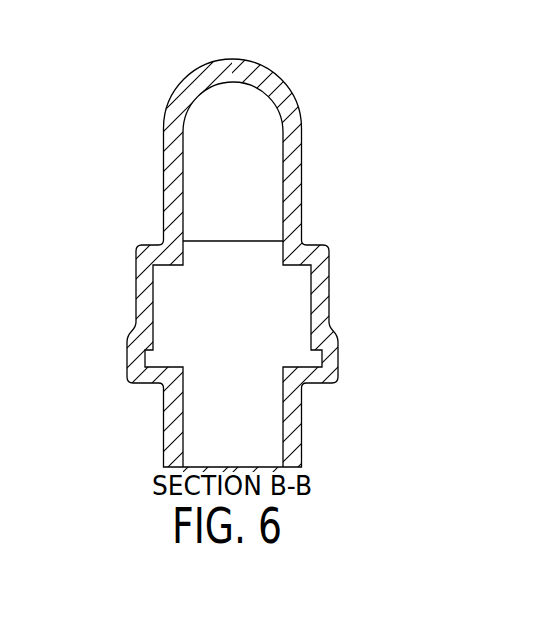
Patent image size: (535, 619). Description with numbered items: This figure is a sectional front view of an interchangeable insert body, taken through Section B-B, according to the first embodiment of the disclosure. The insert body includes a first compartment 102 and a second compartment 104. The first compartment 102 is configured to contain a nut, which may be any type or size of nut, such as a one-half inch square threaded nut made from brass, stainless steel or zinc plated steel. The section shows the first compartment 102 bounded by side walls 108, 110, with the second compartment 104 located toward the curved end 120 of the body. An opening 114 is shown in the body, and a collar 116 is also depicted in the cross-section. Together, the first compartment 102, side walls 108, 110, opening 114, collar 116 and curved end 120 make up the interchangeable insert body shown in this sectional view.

The first compartment 102 is at (294, 283).
The second compartment 104 is at (259, 133).
The side wall 108 is at (137, 292).
The side wall 110 is at (330, 313).
The opening 114 is at (215, 378).
The collar 116 is at (302, 424).
The curved end 120 is at (196, 73).